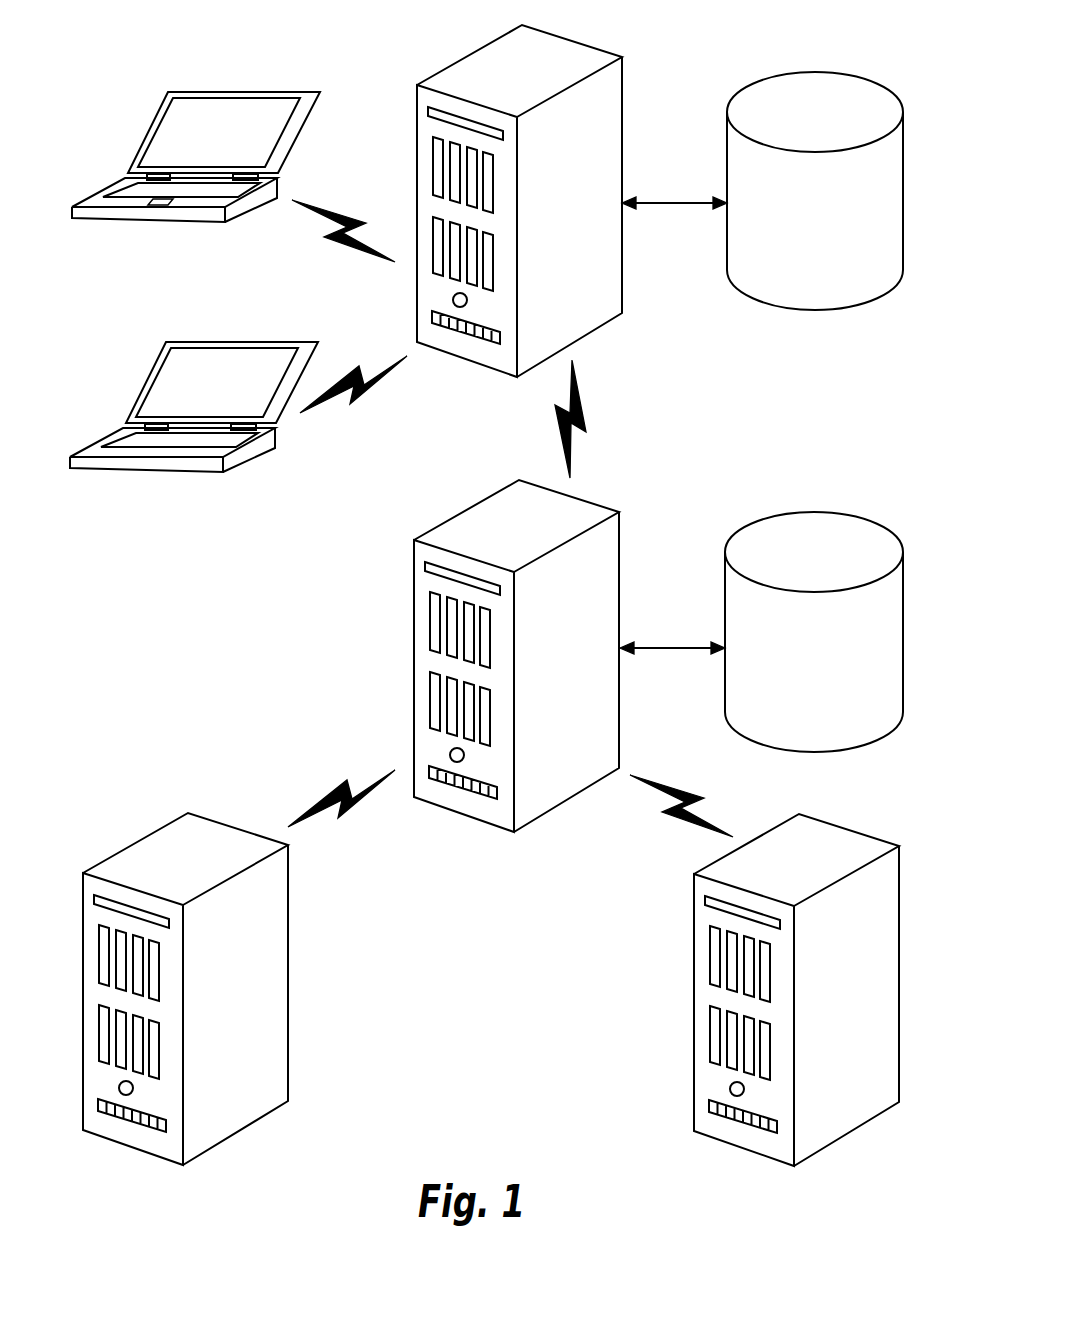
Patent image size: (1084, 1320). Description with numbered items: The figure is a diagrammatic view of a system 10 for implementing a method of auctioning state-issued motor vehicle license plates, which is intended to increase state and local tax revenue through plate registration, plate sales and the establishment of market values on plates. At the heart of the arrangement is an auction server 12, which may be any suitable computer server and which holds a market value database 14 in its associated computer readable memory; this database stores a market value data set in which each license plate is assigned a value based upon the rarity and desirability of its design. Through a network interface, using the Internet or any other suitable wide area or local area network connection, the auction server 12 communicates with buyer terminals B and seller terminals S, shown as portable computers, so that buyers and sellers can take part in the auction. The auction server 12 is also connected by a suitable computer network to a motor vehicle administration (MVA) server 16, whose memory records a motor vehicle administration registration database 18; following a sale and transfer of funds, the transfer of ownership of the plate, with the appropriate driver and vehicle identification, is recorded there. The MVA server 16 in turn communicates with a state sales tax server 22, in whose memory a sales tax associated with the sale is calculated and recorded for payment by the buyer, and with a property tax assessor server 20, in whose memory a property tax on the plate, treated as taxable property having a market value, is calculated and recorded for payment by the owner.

The system 10 is at (146, 571).
The auction server 12 is at (623, 58).
The market value database 14 is at (866, 72).
The motor vehicle administration (MVA) server 16 is at (413, 542).
The motor vehicle administration registration database 18 is at (820, 512).
The property tax assessor server 20 is at (188, 813).
The state sales tax server 22 is at (695, 910).
The buyer terminals B is at (167, 93).
The seller terminals S is at (165, 343).